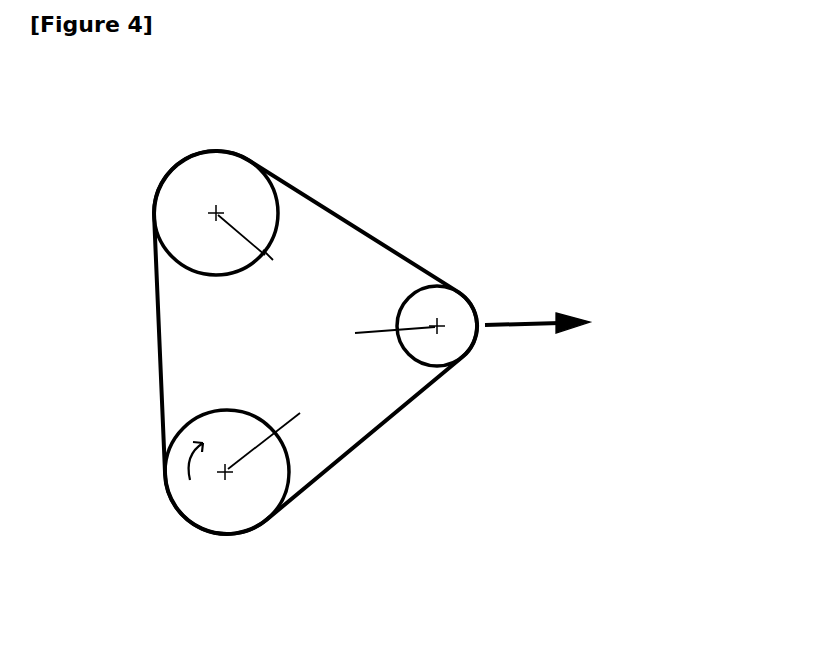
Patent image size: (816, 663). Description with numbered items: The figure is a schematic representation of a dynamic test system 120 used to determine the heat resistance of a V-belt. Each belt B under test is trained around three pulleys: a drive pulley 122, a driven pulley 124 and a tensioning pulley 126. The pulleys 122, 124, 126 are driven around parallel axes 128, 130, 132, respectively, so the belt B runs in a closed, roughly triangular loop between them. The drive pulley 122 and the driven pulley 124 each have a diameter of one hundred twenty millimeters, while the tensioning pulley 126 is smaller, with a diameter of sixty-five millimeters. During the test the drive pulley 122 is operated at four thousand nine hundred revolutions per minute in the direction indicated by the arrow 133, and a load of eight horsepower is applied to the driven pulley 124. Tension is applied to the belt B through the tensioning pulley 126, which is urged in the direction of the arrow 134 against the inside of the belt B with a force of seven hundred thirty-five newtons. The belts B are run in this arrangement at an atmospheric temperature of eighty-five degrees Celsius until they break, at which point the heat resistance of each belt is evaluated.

The test system 120 is at (387, 157).
The belt B is at (375, 237).
The drive pulley 122 is at (223, 512).
The driven pulley 124 is at (230, 177).
The tensioning pulley 126 is at (448, 347).
The axis 128 is at (293, 431).
The axis 130 is at (270, 247).
The axis 132 is at (365, 332).
The arrow 133 is at (187, 463).
The arrow 134 is at (533, 318).